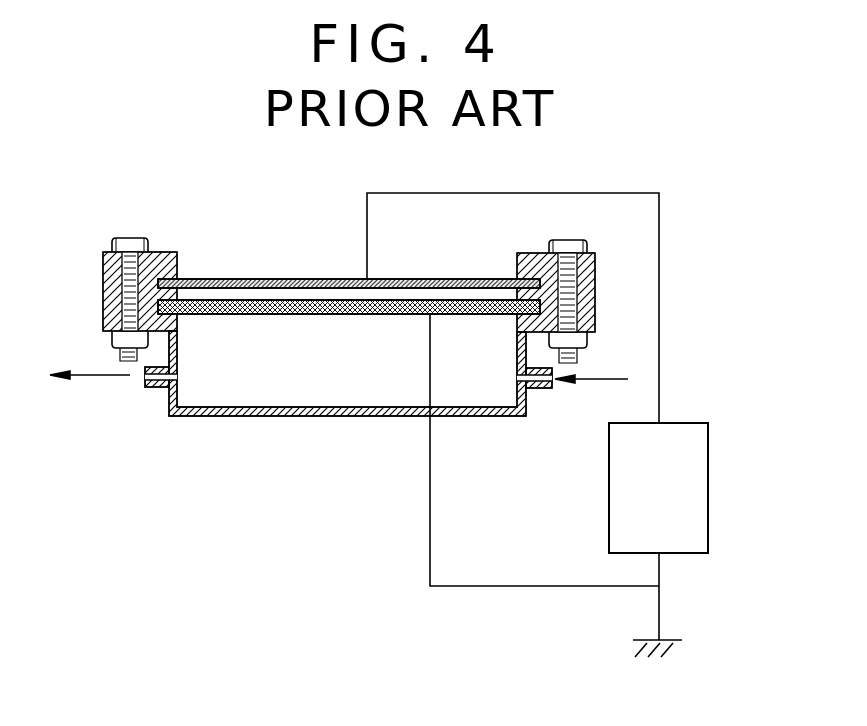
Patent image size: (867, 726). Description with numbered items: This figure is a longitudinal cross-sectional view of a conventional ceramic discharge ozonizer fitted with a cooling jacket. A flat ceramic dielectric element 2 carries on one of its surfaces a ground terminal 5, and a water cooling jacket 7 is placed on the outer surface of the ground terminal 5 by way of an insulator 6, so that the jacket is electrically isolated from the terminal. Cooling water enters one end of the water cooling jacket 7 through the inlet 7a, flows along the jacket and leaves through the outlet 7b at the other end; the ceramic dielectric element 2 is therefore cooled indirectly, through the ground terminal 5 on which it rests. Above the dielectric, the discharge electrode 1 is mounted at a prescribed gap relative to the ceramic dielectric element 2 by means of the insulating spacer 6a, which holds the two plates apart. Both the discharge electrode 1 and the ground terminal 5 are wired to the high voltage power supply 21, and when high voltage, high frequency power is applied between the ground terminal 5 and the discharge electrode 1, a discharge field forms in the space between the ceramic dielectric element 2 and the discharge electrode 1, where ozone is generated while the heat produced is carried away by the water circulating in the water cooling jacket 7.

The discharge electrode 1 is at (258, 279).
The ceramic dielectric element 2 is at (420, 300).
The ground terminal 5 is at (335, 316).
The insulator 6 is at (587, 317).
The insulating spacer 6a is at (596, 290).
The water cooling jacket 7 is at (283, 416).
The inlet 7a is at (543, 390).
The outlet 7b is at (153, 388).
The high voltage power supply 21 is at (704, 493).